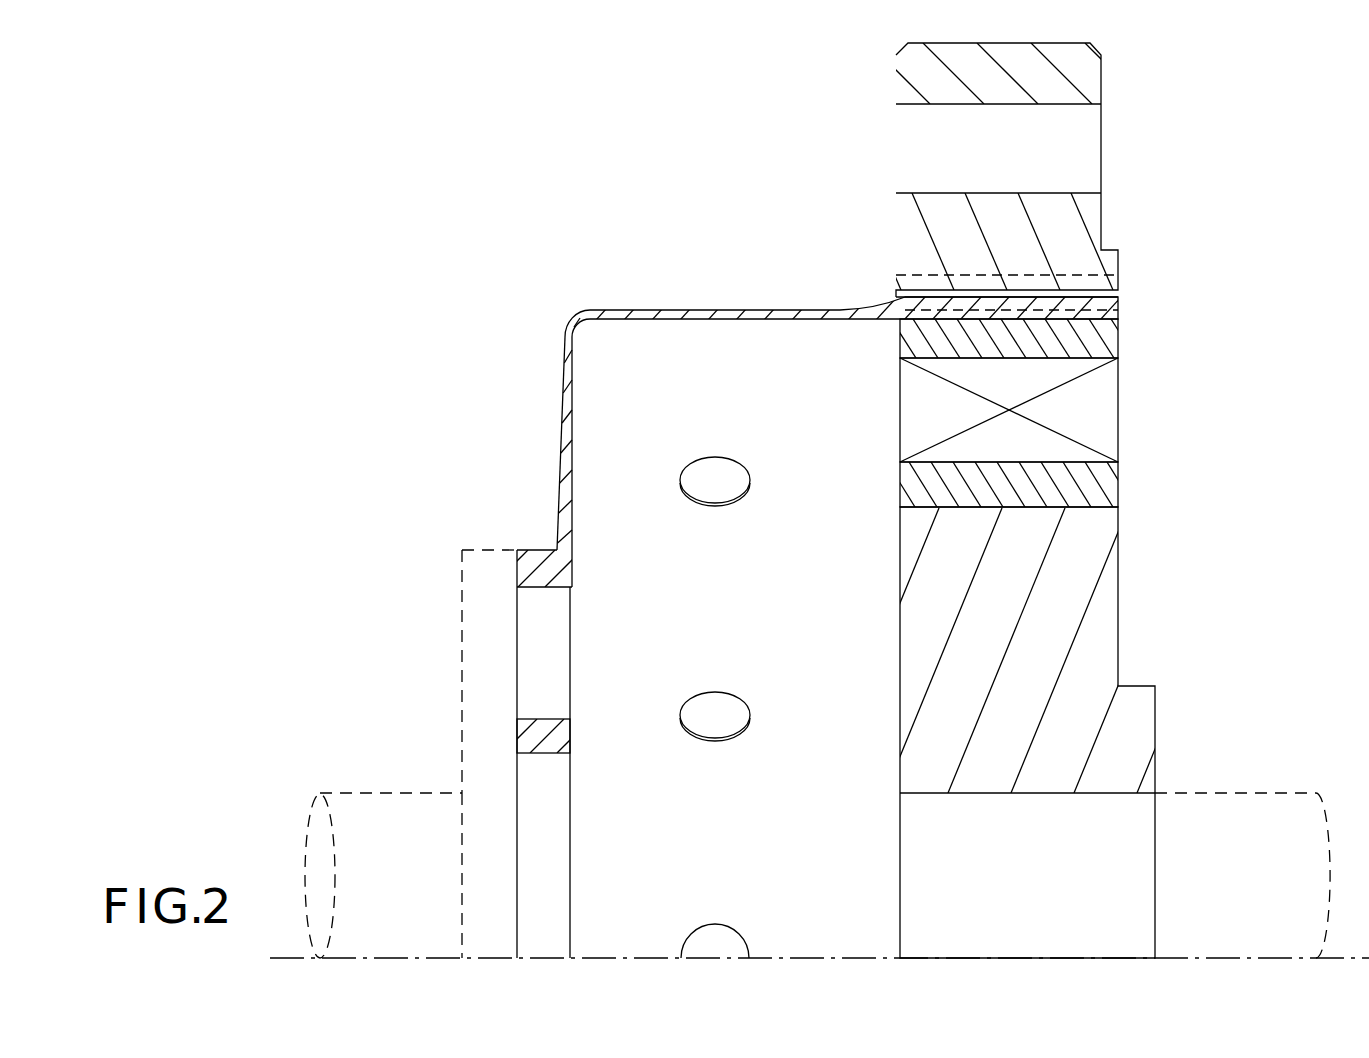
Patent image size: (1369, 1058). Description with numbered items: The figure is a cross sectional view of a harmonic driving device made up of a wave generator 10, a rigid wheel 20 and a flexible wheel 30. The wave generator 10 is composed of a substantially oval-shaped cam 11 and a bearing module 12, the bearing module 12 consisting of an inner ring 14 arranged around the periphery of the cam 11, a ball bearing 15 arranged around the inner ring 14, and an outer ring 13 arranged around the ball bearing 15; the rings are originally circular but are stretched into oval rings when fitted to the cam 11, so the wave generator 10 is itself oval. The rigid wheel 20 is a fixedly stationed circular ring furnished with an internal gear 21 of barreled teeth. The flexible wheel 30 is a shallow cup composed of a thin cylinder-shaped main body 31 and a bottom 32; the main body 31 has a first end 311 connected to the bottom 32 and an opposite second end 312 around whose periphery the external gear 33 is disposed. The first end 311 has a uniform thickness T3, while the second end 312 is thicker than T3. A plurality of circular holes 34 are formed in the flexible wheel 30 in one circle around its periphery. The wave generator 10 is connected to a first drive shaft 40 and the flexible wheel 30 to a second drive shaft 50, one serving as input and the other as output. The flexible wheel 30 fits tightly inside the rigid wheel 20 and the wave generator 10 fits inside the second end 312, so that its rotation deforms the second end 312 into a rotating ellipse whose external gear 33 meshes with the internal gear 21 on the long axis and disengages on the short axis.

The wave generator 10 is at (1038, 732).
The cam 11 is at (912, 651).
The bearing module 12 is at (962, 413).
The outer ring 13 is at (898, 337).
The inner ring 14 is at (986, 475).
The ball bearing 15 is at (908, 418).
The rigid wheel 20 is at (1119, 85).
The internal gear 21 is at (1108, 282).
The flexible wheel 30 is at (846, 566).
The main body 31 is at (803, 308).
The first end 311 is at (603, 308).
The second end 312 is at (1100, 319).
The bottom 32 is at (563, 438).
The external gear 33 is at (1100, 298).
The holes 34 is at (676, 257).
The first drive shaft 40 is at (1248, 800).
The second drive shaft 50 is at (395, 800).
The thickness T3 is at (648, 267).